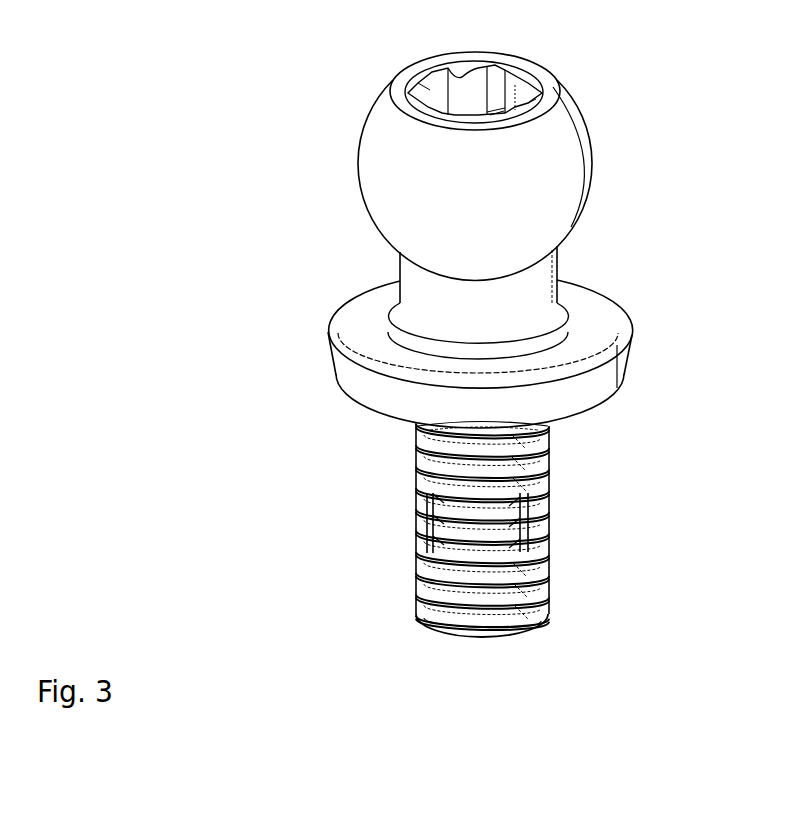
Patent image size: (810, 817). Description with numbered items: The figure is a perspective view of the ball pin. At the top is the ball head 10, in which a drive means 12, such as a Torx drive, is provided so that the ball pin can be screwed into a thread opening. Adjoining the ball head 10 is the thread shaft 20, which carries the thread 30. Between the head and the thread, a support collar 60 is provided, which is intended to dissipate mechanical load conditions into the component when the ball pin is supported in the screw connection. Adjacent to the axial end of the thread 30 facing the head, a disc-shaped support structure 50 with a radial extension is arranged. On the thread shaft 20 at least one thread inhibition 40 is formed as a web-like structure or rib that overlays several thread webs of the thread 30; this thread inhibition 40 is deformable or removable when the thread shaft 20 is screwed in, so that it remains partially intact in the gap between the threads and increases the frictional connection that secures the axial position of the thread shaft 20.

The ball head 10 is at (593, 149).
The drive means 12 is at (468, 85).
The thread shaft 20 is at (550, 517).
The thread 30 is at (550, 472).
The thread inhibition 40 is at (422, 496).
The support structure 50 is at (547, 424).
The support collar 60 is at (328, 356).